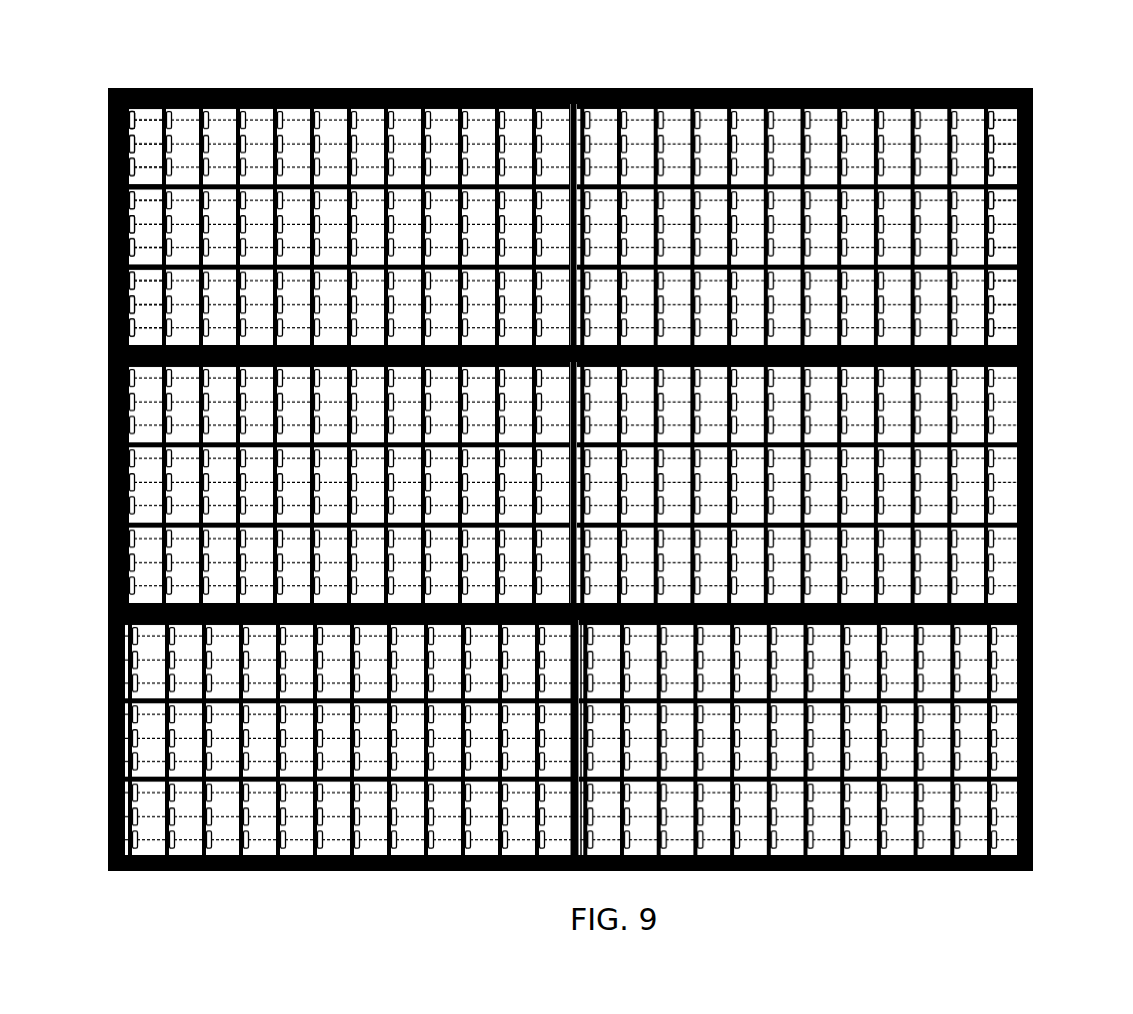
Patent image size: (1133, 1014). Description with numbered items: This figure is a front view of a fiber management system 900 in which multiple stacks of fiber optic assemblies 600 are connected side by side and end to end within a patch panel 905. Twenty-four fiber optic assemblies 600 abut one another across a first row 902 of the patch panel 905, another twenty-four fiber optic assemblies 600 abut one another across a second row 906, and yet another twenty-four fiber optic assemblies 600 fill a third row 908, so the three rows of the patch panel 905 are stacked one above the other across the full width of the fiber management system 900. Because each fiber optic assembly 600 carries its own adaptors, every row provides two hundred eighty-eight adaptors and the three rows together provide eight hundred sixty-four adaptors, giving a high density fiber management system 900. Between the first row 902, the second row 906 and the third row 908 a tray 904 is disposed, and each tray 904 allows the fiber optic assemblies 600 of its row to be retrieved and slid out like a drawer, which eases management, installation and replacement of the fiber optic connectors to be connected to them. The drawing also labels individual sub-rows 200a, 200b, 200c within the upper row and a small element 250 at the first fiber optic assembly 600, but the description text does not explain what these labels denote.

The fiber management system 900 is at (772, 65).
The fiber optic assembly 600 is at (163, 88).
The cell element 250 is at (147, 132).
The first row section 200a is at (95, 153).
The second row section 200b is at (96, 236).
The third row section 200c is at (98, 301).
The first row 902 is at (1043, 217).
The tray 904 is at (1043, 348).
The patch panel 905 is at (1043, 128).
The second row 906 is at (1043, 494).
The third row 908 is at (1043, 715).